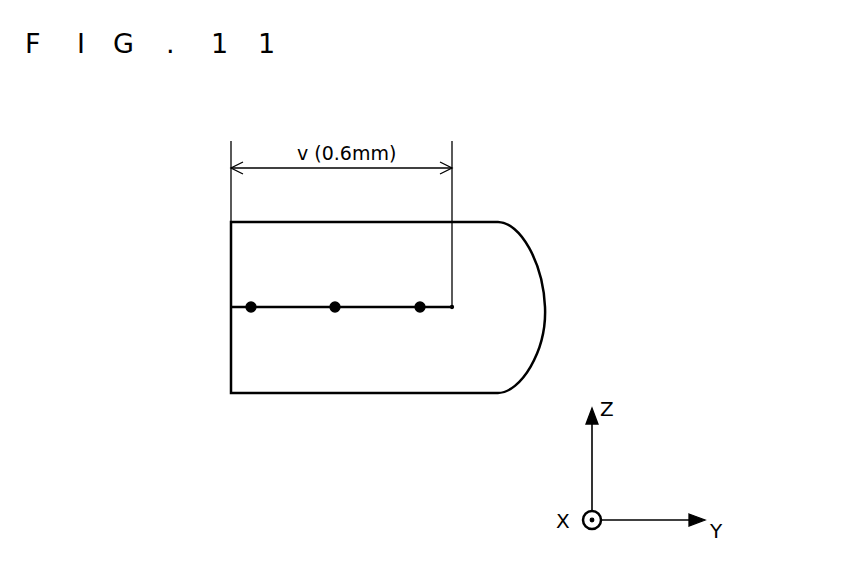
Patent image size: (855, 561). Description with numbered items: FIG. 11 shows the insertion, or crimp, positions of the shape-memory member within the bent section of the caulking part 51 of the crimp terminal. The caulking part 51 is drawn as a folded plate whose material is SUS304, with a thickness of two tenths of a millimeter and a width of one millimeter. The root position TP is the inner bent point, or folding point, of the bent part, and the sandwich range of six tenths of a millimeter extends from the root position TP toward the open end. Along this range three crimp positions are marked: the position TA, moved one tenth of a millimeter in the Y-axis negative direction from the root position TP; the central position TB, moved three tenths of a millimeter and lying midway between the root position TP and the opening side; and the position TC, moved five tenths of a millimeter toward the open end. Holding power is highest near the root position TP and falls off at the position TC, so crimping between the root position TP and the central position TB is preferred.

The caulking part 51 is at (289, 413).
The root position TP is at (452, 307).
The crimp position TA is at (420, 316).
The central position TB is at (335, 316).
The crimp position TC is at (251, 316).